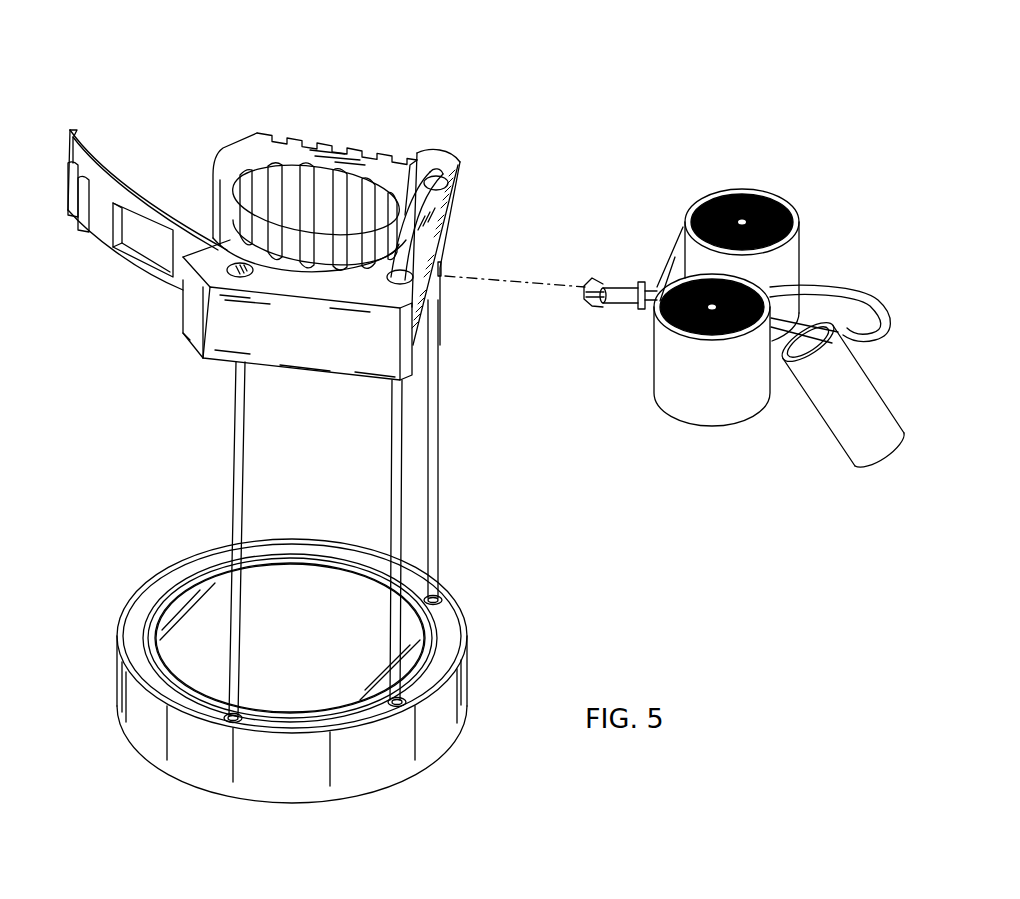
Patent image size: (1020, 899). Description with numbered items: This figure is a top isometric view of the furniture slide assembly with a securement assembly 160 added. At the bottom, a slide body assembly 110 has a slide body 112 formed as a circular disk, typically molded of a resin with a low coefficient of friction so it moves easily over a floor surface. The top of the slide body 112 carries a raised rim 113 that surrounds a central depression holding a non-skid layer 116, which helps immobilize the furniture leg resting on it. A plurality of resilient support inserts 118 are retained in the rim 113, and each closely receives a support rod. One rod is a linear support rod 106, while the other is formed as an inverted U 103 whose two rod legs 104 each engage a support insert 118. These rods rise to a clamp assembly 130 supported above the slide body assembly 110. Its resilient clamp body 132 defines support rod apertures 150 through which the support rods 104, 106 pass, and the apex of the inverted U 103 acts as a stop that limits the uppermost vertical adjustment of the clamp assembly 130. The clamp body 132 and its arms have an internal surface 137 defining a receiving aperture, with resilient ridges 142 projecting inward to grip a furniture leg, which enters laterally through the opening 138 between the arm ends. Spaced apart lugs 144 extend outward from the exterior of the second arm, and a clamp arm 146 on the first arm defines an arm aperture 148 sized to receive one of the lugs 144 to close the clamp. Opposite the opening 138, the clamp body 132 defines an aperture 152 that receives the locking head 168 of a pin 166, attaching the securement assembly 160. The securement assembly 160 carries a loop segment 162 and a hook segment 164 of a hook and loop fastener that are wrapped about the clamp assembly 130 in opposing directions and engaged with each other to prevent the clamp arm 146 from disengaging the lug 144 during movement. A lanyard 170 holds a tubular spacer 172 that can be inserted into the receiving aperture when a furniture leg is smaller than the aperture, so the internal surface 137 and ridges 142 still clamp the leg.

The slide body assembly 110 is at (492, 78).
The inverted U support rod 103 is at (418, 158).
The rod leg 104 is at (397, 522).
The support rod 106 is at (232, 452).
The slide body 112 is at (407, 777).
The raised rim 113 is at (163, 588).
The non-skid layer 116 is at (290, 638).
The support inserts 118 is at (447, 603).
The clamp assembly 130 is at (246, 135).
The clamp body 132 is at (458, 247).
The internal surface 137 is at (347, 208).
The opening 138 is at (186, 190).
The resilient ridges 142 is at (292, 202).
The lugs 144 is at (372, 148).
The clamp arm 146 is at (91, 158).
The arm aperture 148 is at (150, 250).
The support rod apertures 150 is at (460, 178).
The aperture 152 is at (442, 266).
The securement assembly 160 is at (762, 160).
The loop segment 162 is at (700, 420).
The hook segment 164 is at (797, 217).
The pin 166 is at (634, 282).
The locking head 168 is at (602, 272).
The lanyard 170 is at (852, 284).
The spacer 172 is at (816, 425).